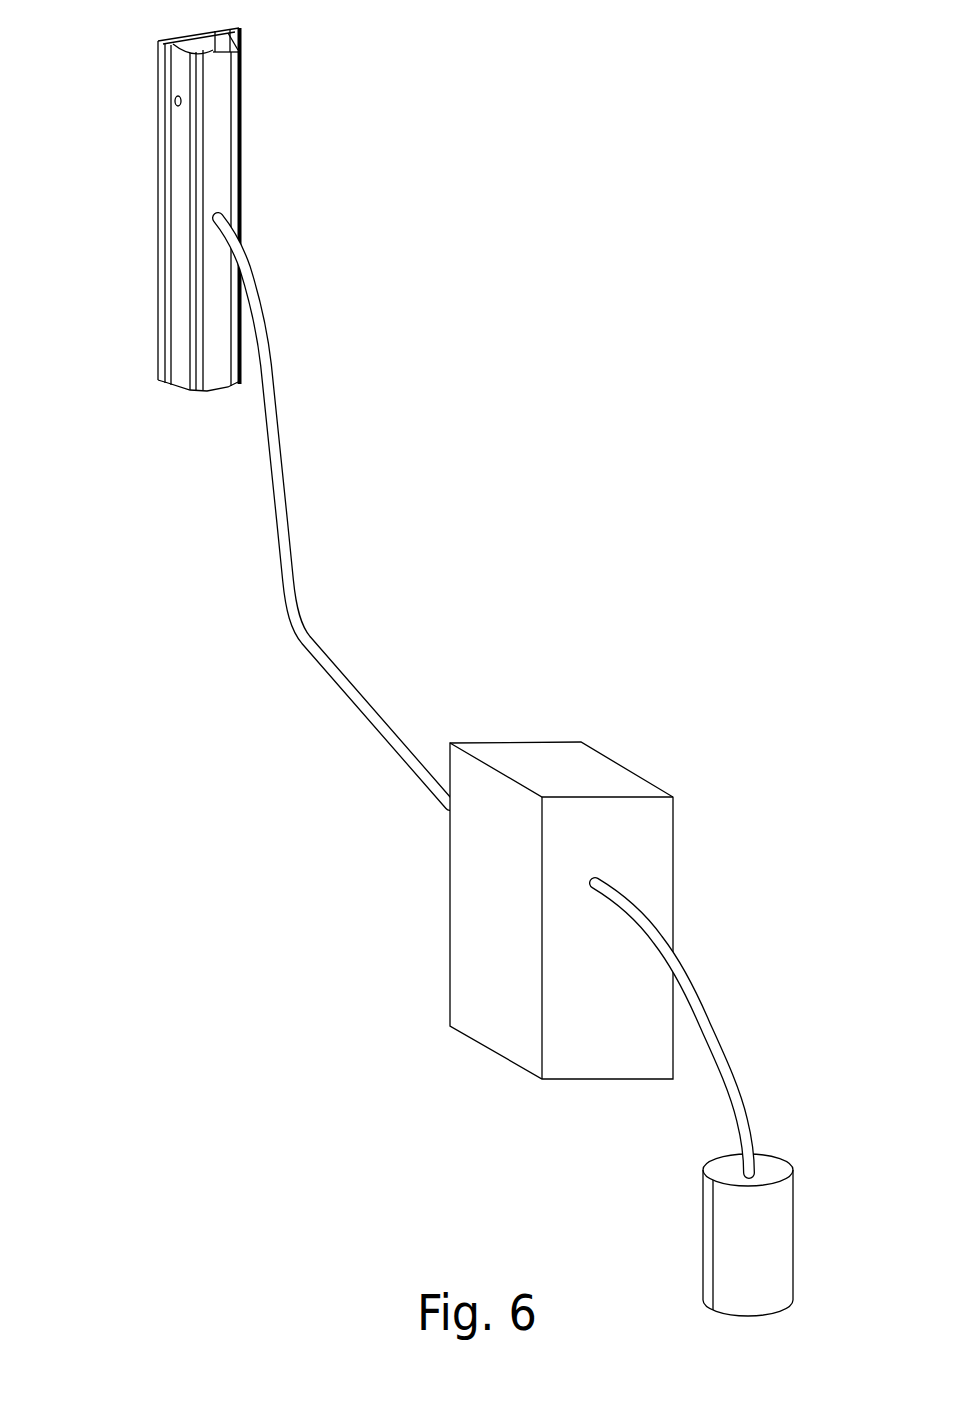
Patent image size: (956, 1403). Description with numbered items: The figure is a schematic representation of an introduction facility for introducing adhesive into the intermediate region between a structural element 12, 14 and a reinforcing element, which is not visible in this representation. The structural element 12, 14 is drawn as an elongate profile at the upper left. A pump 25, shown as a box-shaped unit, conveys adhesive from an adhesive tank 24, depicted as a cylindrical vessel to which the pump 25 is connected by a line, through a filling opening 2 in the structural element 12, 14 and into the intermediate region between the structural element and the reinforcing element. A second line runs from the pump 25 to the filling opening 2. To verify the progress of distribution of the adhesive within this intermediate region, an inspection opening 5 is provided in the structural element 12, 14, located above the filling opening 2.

The structural element 12 is at (263, 209).
The structural element 14 is at (223, 82).
The inspection opening 5 is at (175, 99).
The filling opening 2 is at (216, 216).
The pump 25 is at (581, 771).
The adhesive tank 24 is at (720, 1240).